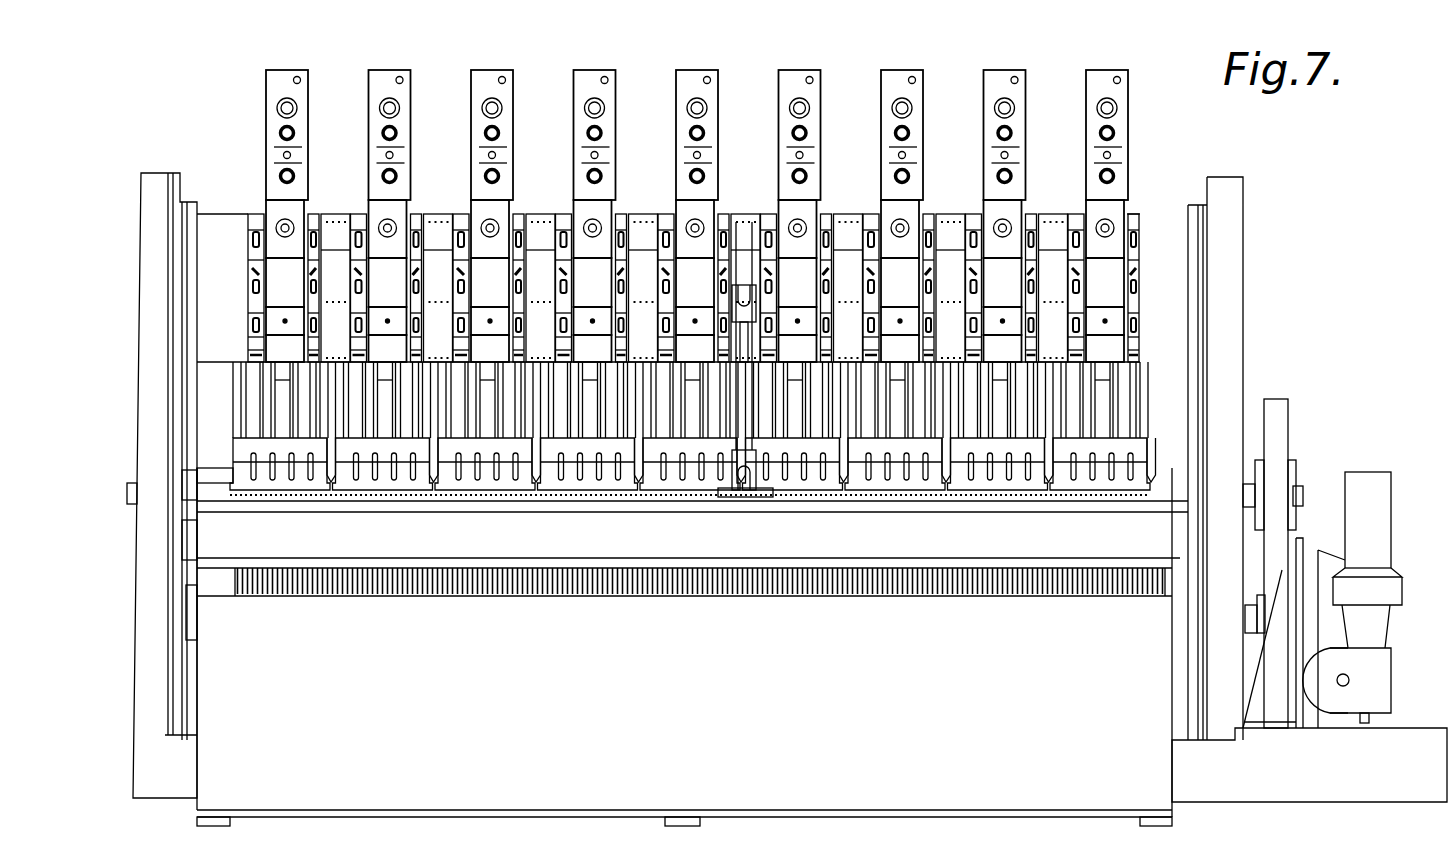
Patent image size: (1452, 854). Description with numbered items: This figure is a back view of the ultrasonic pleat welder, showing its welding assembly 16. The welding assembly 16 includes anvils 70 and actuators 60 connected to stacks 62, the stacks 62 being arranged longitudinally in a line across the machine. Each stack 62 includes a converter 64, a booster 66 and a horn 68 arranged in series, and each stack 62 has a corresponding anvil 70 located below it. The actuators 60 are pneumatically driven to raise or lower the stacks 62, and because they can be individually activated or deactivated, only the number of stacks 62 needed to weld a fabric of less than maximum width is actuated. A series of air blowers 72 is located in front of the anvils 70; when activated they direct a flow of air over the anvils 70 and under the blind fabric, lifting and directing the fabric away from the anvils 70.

The welding assembly 16 is at (241, 160).
The actuator 60 is at (1128, 157).
The stack 62 is at (262, 315).
The converter 64 is at (1106, 281).
The booster 66 is at (1106, 347).
The horn 68 is at (272, 465).
The anvil 70 is at (1100, 497).
The air blower 72 is at (300, 497).